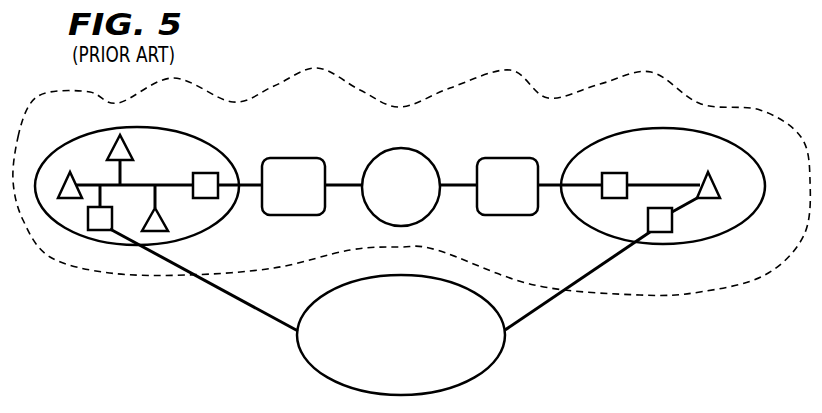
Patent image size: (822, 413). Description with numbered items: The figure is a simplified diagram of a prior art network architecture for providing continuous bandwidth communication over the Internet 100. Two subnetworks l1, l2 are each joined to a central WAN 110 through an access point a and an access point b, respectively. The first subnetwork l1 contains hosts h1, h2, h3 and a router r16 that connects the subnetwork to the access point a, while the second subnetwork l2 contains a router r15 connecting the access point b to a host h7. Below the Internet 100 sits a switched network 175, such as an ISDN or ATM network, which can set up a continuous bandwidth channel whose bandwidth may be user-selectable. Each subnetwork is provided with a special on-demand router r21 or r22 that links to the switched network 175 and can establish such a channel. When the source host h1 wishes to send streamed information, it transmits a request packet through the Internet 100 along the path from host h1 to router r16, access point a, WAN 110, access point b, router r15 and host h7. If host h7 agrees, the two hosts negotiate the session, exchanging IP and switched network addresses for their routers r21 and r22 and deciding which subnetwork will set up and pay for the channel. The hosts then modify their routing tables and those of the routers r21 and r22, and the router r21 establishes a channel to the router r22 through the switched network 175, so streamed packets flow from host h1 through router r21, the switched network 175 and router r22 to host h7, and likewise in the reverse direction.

The Internet 100 is at (358, 82).
The WAN 110 is at (368, 162).
The switched network 175 is at (300, 358).
The subnetwork l1 is at (137, 179).
The subnetwork l2 is at (663, 179).
The host h1 is at (166, 208).
The host h2 is at (130, 160).
The host h3 is at (62, 183).
The host h7 is at (716, 180).
The router r15 is at (613, 172).
The router r16 is at (197, 174).
The on-demand router r21 is at (116, 207).
The on-demand router r22 is at (684, 215).
The access point a is at (293, 174).
The access point b is at (507, 174).